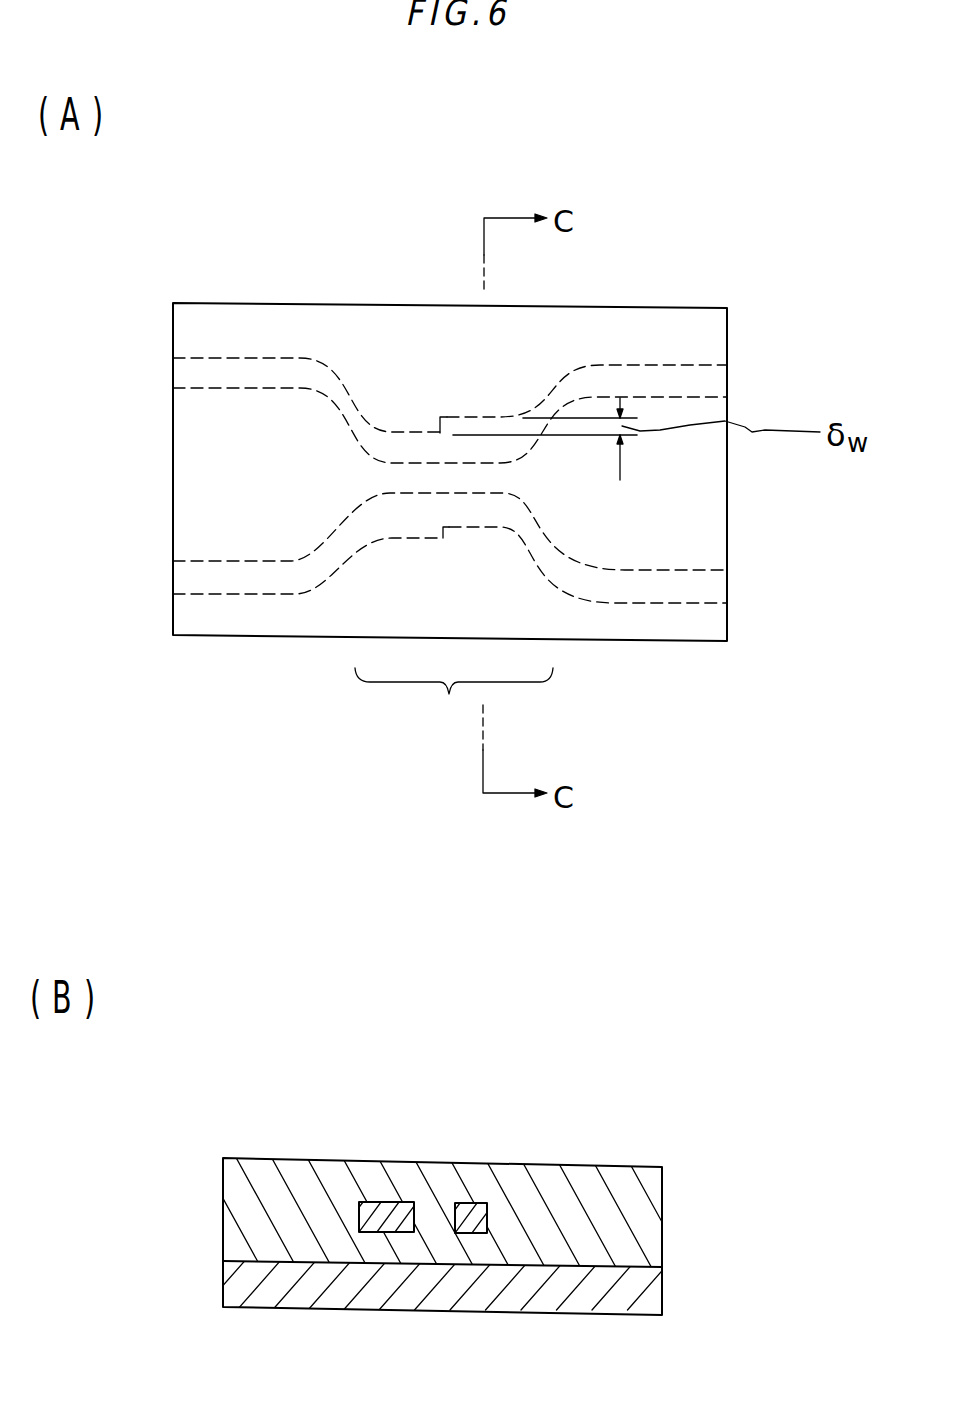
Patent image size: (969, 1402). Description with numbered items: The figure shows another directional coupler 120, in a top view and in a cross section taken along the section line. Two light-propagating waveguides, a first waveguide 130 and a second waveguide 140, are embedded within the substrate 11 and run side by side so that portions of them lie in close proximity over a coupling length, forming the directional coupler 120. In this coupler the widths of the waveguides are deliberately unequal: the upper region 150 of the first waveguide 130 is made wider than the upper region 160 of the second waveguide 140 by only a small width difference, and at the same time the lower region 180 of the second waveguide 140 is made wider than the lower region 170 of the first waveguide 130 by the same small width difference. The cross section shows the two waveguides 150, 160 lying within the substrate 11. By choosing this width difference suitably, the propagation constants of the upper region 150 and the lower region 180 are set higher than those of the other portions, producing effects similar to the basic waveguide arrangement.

The substrate 11 is at (315, 302).
The directional coupler 120 is at (417, 683).
The first waveguide 130 is at (667, 383).
The second waveguide 140 is at (653, 583).
The upper region of the first waveguide 150 is at (487, 423).
The upper region of the second waveguide 160 is at (485, 513).
The lower region of the first waveguide 170 is at (415, 450).
The lower region of the second waveguide 180 is at (408, 517).